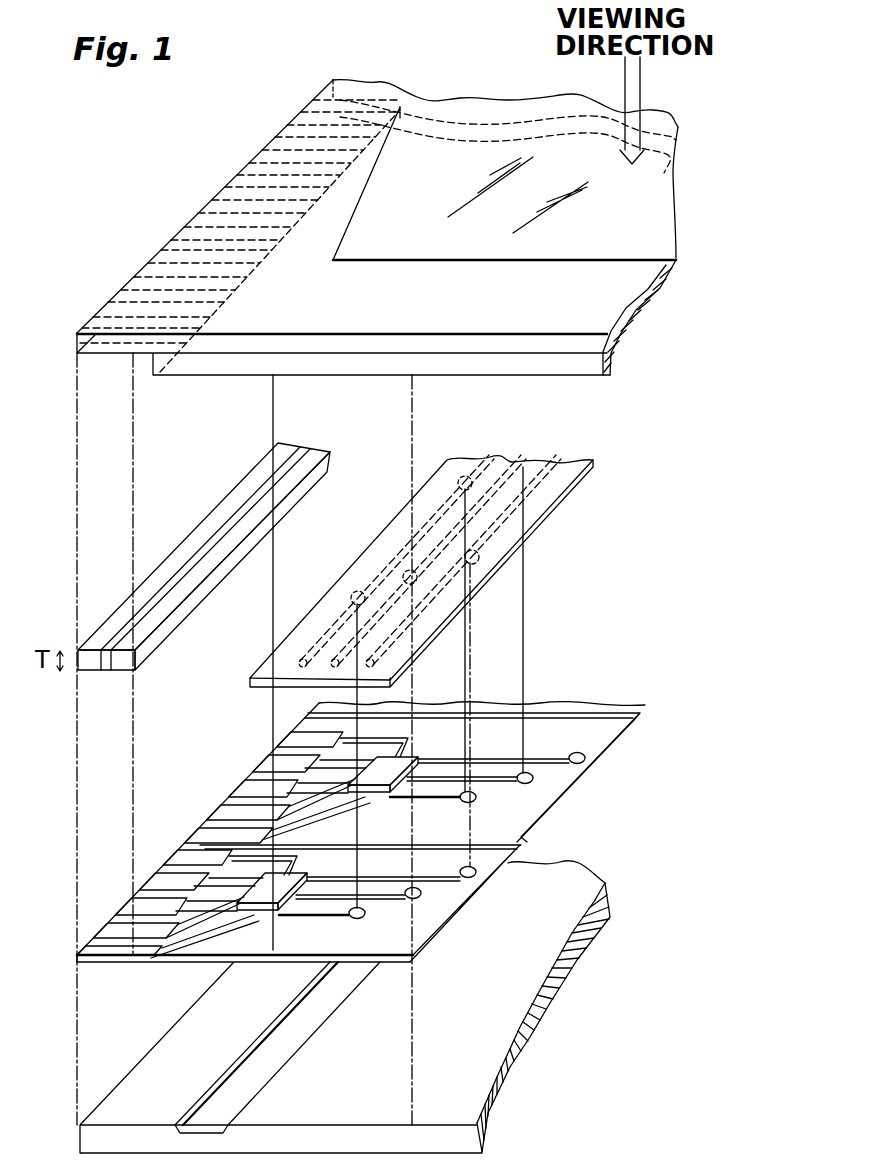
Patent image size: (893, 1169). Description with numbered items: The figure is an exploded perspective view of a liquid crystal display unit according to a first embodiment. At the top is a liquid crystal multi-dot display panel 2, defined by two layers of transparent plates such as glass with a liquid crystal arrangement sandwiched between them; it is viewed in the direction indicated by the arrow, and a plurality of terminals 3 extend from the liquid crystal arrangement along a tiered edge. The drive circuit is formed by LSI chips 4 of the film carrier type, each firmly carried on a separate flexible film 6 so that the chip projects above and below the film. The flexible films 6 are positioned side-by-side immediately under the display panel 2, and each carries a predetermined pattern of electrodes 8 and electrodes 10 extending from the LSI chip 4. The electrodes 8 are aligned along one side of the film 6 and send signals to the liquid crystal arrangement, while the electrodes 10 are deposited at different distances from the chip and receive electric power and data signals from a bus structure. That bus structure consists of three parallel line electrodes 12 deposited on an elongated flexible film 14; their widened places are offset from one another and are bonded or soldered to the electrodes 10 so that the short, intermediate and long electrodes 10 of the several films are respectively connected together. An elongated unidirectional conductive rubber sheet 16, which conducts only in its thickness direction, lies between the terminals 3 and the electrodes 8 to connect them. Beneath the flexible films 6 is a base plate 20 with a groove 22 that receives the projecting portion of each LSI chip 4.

The liquid crystal multi-dot display panel 2 is at (199, 157).
The terminals 3 is at (75, 330).
The unidirectional conductive rubber sheet 16 is at (175, 525).
The elongated flexible film 14 is at (575, 482).
The line electrodes 12 is at (547, 460).
The flexible film 6 is at (437, 917).
The electrodes 8 is at (92, 950).
The LSI chip 4 is at (260, 910).
The electrodes 10 is at (362, 918).
The base plate 20 is at (510, 1023).
The groove 22 is at (207, 1097).